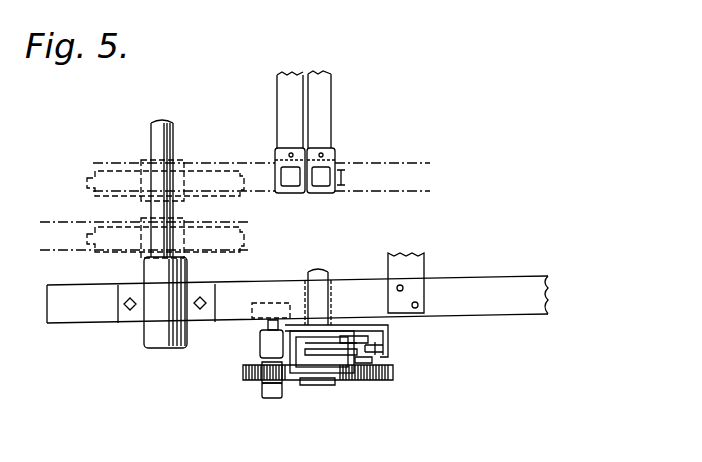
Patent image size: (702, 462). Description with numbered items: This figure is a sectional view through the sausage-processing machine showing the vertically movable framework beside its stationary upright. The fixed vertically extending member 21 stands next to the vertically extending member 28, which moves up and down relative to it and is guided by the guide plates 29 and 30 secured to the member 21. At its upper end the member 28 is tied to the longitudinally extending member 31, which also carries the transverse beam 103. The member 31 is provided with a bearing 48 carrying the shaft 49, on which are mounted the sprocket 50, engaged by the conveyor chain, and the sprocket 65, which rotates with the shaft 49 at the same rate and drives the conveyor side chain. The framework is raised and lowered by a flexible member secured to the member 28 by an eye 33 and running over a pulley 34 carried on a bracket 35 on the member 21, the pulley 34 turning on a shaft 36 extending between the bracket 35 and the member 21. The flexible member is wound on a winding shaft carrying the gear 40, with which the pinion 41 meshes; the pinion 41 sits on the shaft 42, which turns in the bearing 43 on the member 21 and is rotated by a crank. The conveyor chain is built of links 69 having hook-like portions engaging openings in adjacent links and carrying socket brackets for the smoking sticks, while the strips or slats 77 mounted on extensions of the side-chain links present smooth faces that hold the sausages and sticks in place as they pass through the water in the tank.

The vertically extending member 21 is at (302, 324).
The vertically extending member 28 is at (388, 328).
The guide plate 29 is at (352, 335).
The guide plate 30 is at (364, 364).
The longitudinally extending member 31 is at (477, 291).
The eye 33 is at (383, 350).
The pulley 34 is at (345, 358).
The bracket 35 is at (303, 383).
The shaft 36 is at (330, 335).
The gear 40 is at (393, 373).
The pinion 41 is at (260, 375).
The shaft 42 is at (270, 398).
The bearing 43 is at (262, 341).
The bearing 48 is at (182, 303).
The shaft 49 is at (160, 141).
The sprocket 50 is at (112, 242).
The sprocket 65 is at (88, 185).
The link 69 is at (322, 192).
The strip or slat 77 is at (288, 113).
The transverse beam 103 is at (408, 262).